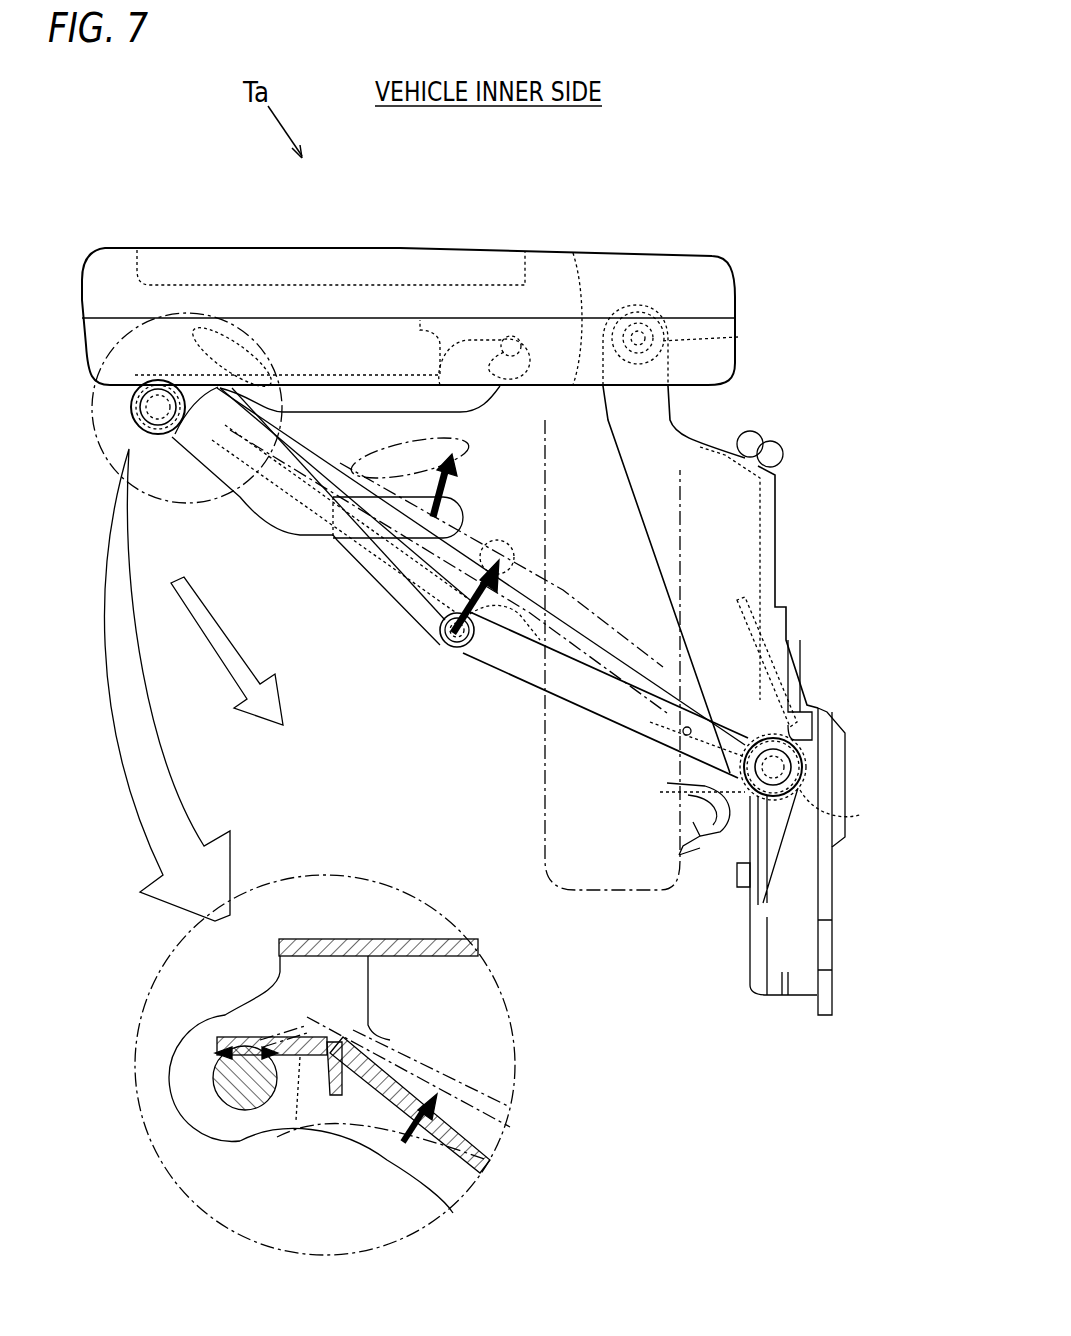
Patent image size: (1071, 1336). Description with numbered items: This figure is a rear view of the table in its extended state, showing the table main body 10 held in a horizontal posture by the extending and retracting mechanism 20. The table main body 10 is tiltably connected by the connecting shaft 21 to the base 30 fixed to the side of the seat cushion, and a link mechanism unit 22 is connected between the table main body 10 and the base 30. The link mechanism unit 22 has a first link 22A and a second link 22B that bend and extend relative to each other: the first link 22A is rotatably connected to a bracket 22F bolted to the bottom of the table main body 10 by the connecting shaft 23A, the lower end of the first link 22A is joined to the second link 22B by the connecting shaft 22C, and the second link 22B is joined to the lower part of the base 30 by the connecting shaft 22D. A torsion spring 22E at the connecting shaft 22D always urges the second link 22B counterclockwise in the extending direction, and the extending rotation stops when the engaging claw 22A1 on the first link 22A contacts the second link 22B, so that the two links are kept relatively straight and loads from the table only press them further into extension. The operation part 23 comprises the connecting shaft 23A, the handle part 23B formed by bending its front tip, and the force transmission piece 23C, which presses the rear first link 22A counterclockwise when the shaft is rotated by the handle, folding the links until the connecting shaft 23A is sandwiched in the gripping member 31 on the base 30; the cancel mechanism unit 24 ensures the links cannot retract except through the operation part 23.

The table main body 10 is at (382, 245).
The extending and retracting mechanism 20 is at (460, 710).
The connecting shaft 21 is at (665, 342).
The link mechanism unit 22 is at (562, 805).
The first link 22A is at (400, 587).
The engaging claw 22A1 is at (505, 583).
The second link 22B is at (612, 712).
The connecting shaft 22C is at (450, 641).
The connecting shaft 22D is at (775, 767).
The torsion spring 22E is at (795, 790).
The bracket 22F is at (322, 975).
The operation part 23 is at (399, 764).
The connecting shaft 23A is at (158, 412).
The handle part 23B is at (382, 525).
The force transmission piece 23C is at (305, 1160).
The cancel mechanism unit 24 is at (125, 414).
The base 30 is at (785, 950).
The gripping member 31 is at (703, 842).